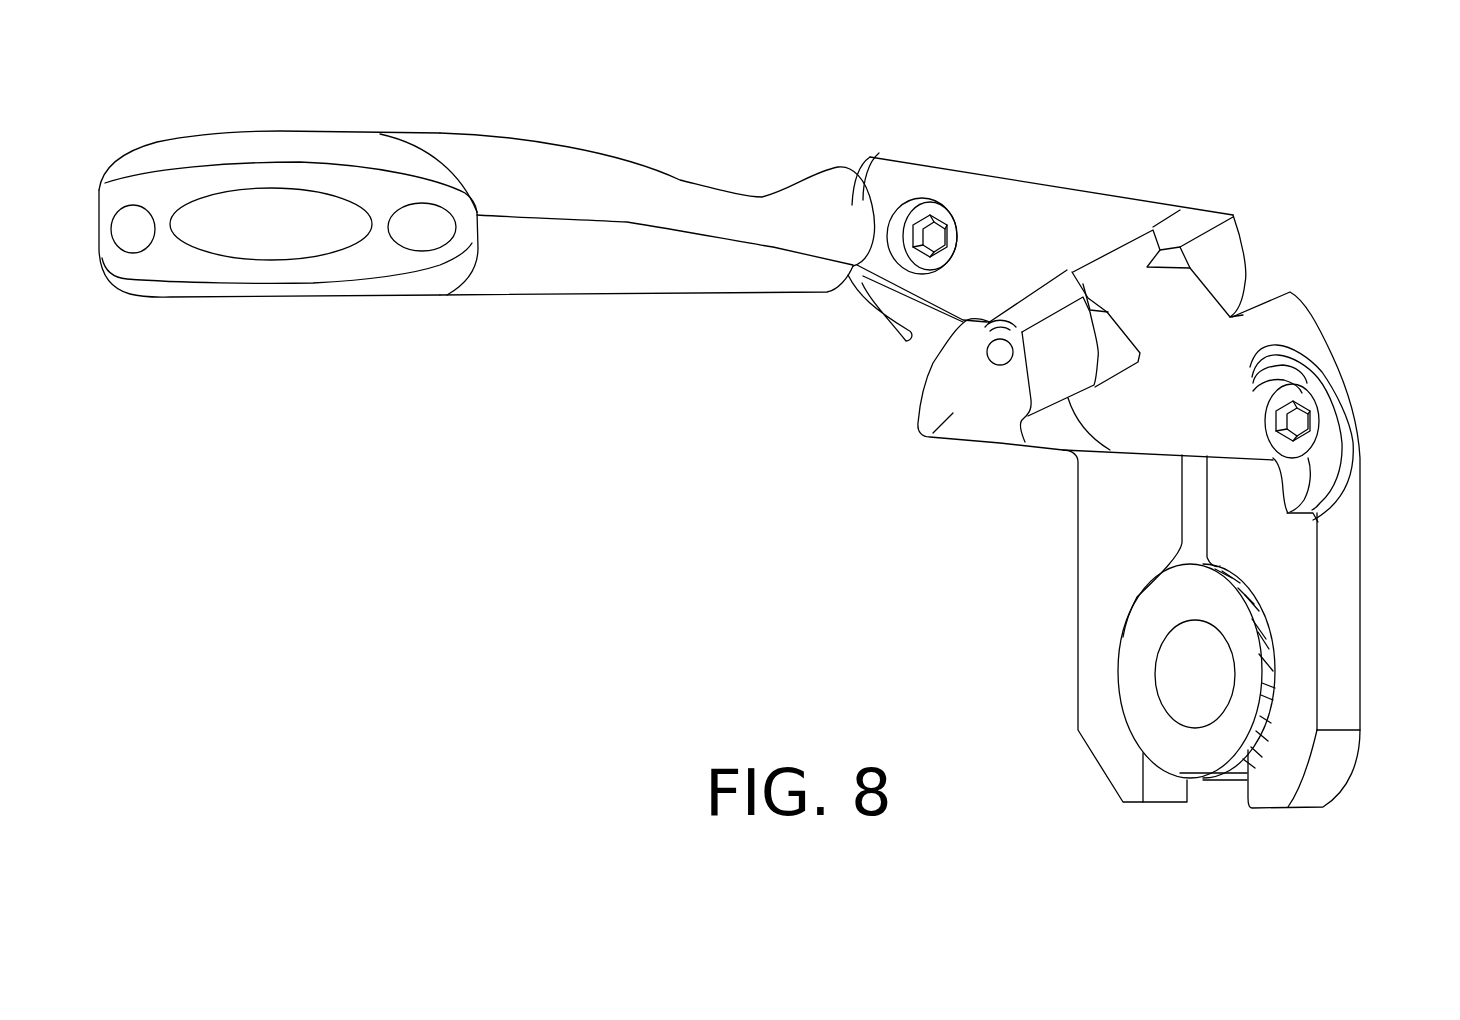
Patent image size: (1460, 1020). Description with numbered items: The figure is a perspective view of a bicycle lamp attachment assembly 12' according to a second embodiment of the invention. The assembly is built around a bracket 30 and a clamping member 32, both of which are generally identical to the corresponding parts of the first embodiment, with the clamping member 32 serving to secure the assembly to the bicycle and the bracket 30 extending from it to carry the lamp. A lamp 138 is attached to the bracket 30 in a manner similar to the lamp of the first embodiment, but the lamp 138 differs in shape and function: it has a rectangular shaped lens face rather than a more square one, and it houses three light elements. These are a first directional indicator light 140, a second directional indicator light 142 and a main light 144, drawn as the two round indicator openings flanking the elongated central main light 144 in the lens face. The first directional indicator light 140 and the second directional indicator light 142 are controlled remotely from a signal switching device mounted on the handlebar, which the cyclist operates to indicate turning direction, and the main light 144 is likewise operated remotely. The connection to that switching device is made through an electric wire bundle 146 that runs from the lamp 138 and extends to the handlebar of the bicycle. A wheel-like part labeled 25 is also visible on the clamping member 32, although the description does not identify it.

The bicycle lamp attachment assembly 12' is at (1049, 209).
The lamp 138 is at (552, 162).
The first directional indicator light 140 is at (130, 238).
The second directional indicator light 142 is at (427, 238).
The main light 144 is at (272, 243).
The electric wire bundle 146 is at (865, 322).
The bracket 30 is at (938, 437).
The clamping member 32 is at (1362, 590).
The wheel 25 is at (1210, 752).